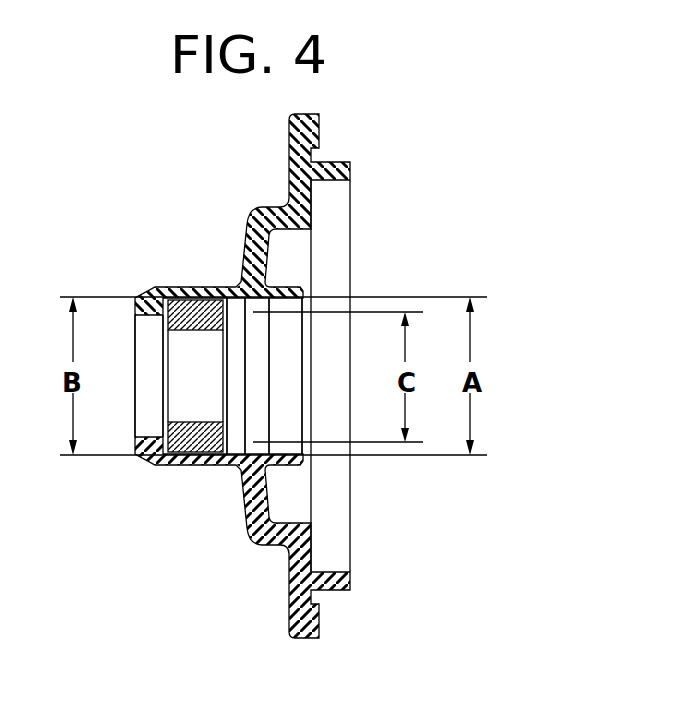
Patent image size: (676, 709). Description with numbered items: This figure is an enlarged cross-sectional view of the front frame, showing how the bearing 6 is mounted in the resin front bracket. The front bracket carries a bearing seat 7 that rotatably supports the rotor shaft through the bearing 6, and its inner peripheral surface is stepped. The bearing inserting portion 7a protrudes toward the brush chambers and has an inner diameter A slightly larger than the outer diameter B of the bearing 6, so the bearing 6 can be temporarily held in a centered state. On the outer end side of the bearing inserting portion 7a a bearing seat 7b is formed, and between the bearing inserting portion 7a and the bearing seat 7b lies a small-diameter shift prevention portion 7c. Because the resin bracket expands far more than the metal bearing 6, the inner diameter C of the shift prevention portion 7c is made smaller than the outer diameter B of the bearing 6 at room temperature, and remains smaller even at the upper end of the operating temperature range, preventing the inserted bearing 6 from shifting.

The bearing seat 7 is at (269, 376).
The bearing inserting portion 7a is at (283, 287).
The bearing seat 7b is at (208, 287).
The shift prevention portion 7c is at (236, 283).
The bearing 6 is at (206, 465).